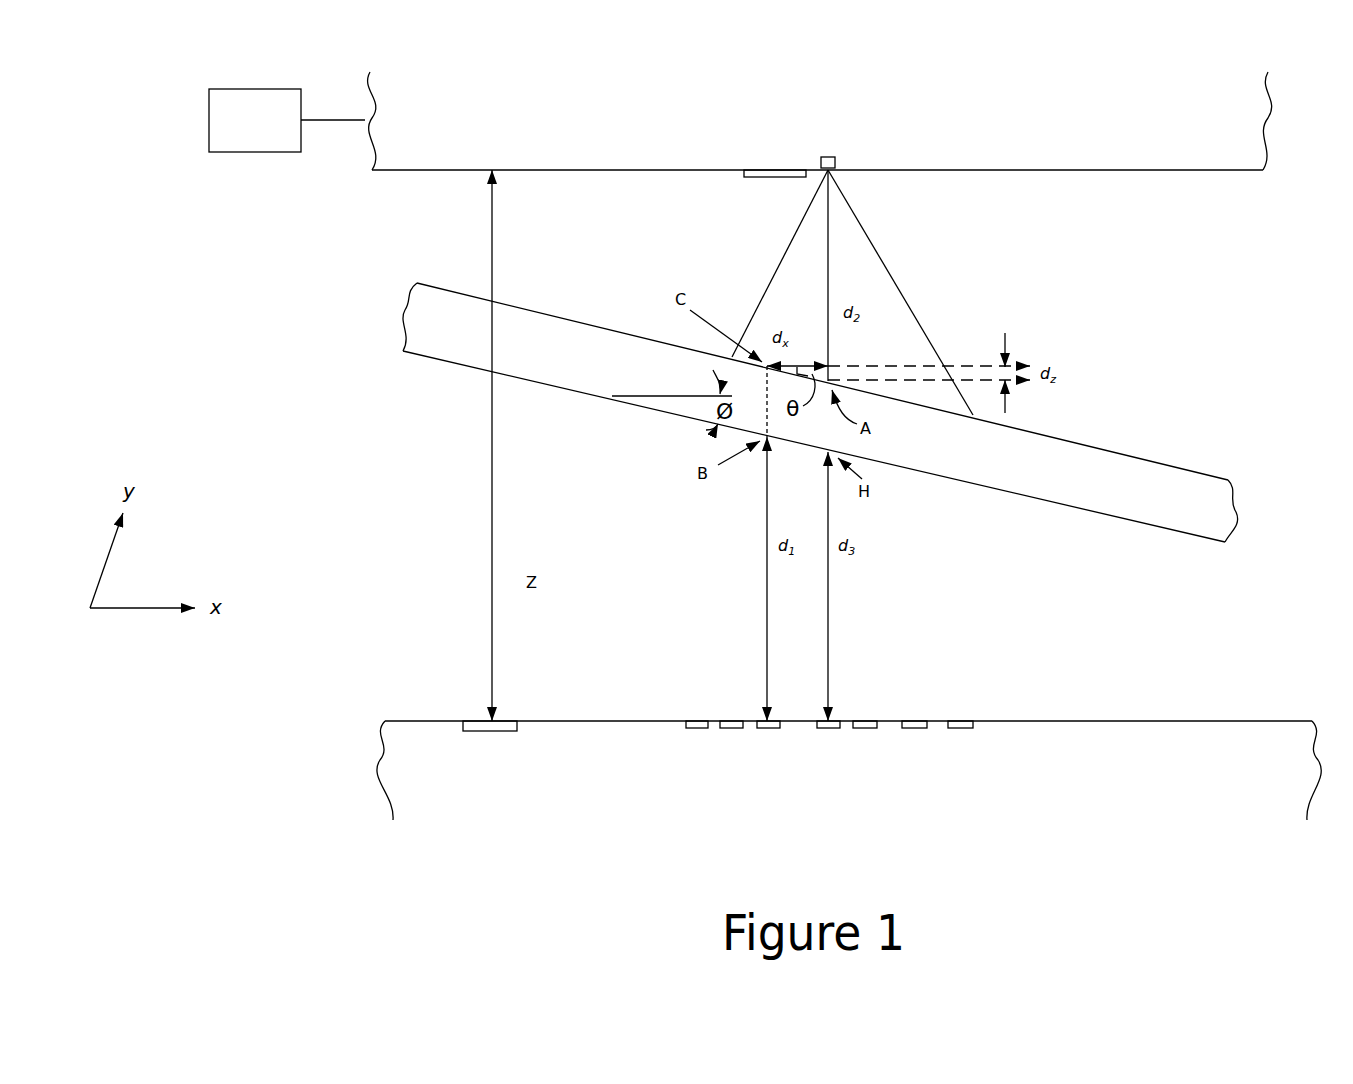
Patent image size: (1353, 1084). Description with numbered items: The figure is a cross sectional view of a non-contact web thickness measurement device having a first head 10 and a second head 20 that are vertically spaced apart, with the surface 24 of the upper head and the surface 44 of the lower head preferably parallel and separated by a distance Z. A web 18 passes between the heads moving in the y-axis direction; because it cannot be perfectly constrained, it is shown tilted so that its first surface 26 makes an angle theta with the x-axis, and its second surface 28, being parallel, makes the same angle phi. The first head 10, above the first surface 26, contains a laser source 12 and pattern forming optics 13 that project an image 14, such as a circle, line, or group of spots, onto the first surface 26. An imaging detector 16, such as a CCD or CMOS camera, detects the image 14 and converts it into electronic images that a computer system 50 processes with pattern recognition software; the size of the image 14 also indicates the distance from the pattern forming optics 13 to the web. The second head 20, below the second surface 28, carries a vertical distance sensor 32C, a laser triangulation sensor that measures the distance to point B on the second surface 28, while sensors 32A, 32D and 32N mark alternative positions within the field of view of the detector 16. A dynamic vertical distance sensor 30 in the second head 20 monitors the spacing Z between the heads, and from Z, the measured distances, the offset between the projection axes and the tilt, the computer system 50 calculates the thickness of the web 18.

The first head 10 is at (1228, 117).
The laser source 12 is at (830, 158).
The pattern forming optics 13 is at (835, 166).
The image 14 is at (920, 323).
The imaging detector 16 is at (765, 170).
The web 18 is at (1208, 483).
The second head 20 is at (1200, 774).
The surface 24 is at (1195, 170).
The first surface 26 is at (543, 315).
The second surface 28 is at (993, 487).
The dynamic vertical distance sensor 30 is at (492, 731).
The sensor 32A is at (700, 728).
The vertical distance sensor 32C is at (762, 728).
The sensor 32D is at (830, 728).
The sensor 32N is at (965, 728).
The surface 44 is at (1197, 721).
The computer system 50 is at (264, 129).